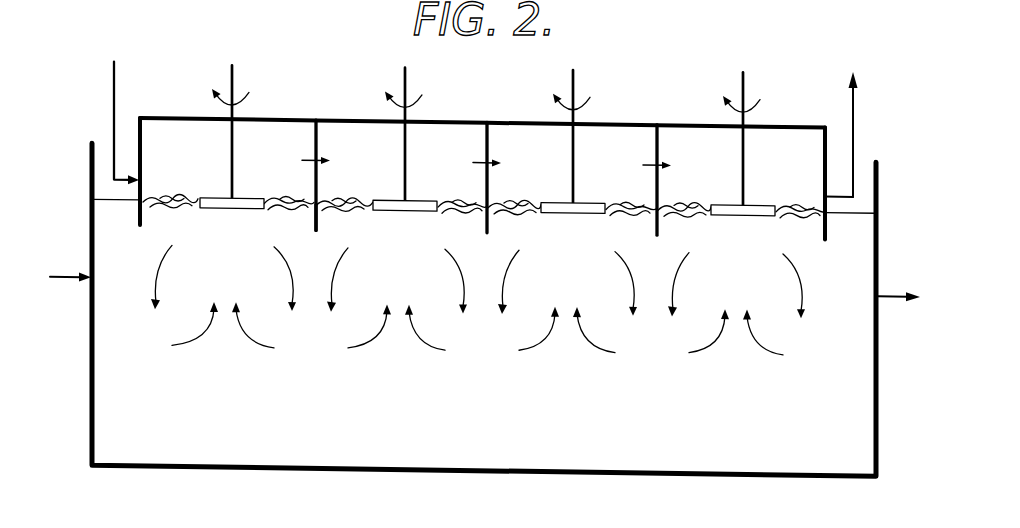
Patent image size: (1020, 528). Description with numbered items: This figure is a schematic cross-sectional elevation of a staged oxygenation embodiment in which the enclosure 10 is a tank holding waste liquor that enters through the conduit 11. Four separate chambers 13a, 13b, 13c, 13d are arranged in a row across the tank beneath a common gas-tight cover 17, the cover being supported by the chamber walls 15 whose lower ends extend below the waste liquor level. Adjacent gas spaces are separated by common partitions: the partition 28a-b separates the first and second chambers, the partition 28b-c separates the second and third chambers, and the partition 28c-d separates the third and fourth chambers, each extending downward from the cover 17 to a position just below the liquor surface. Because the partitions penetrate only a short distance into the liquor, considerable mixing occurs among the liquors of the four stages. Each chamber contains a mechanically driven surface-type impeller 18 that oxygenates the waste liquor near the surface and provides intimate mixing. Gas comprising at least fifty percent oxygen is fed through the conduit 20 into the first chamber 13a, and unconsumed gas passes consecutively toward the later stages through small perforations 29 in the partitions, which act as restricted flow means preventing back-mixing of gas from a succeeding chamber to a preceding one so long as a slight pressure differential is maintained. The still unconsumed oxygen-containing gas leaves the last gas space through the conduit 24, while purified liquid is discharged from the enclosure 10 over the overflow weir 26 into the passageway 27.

The enclosure 10 is at (880, 350).
The conduit 11 is at (75, 249).
The first oxygenation chamber 13a is at (167, 135).
The second oxygenation chamber 13b is at (445, 131).
The third oxygenation chamber 13c is at (644, 128).
The fourth oxygenation chamber 13d is at (775, 137).
The chamber wall 15 is at (322, 217).
The gas-tight cover 17 is at (258, 109).
The surface-type impeller 18 is at (240, 202).
The oxygen conduit 20 is at (114, 80).
The gas discharge conduit 24 is at (856, 93).
The overflow weir 26 is at (822, 183).
The passageway 27 is at (892, 286).
The common partition 28a-b is at (340, 92).
The common partition 28b-c is at (530, 103).
The common partition 28c-d is at (667, 127).
The perforations 29 is at (312, 151).